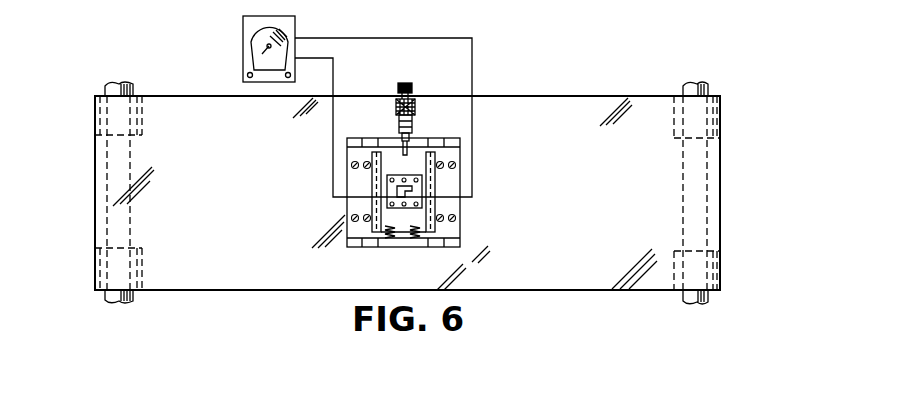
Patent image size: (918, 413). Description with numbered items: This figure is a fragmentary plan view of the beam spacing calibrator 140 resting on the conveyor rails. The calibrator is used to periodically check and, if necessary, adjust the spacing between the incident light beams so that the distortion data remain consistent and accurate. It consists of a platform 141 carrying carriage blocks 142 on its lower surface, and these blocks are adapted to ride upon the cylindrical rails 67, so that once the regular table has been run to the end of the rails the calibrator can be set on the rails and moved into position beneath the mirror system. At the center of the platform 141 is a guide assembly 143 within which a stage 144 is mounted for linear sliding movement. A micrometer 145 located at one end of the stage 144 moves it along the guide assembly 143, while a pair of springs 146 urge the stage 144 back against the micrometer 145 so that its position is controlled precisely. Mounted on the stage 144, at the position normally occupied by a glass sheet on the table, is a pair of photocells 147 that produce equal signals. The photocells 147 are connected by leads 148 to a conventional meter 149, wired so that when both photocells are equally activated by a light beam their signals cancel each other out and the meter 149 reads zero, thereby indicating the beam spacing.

The beam spacing calibrator 140 is at (560, 88).
The platform 141 is at (243, 224).
The carriage blocks 142 is at (142, 120).
The guide assembly 143 is at (455, 232).
The stage 144 is at (387, 216).
The micrometer 145 is at (392, 104).
The springs 146 is at (413, 226).
The photocells 147 is at (390, 205).
The leads 148 is at (333, 128).
The meter 149 is at (243, 47).
The cylindrical rails 67 is at (105, 88).